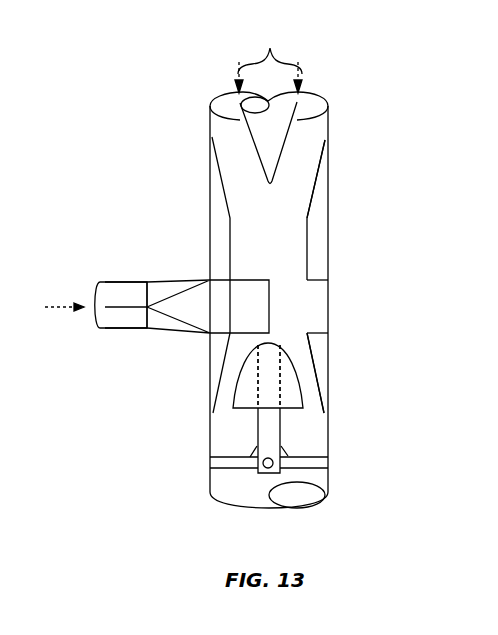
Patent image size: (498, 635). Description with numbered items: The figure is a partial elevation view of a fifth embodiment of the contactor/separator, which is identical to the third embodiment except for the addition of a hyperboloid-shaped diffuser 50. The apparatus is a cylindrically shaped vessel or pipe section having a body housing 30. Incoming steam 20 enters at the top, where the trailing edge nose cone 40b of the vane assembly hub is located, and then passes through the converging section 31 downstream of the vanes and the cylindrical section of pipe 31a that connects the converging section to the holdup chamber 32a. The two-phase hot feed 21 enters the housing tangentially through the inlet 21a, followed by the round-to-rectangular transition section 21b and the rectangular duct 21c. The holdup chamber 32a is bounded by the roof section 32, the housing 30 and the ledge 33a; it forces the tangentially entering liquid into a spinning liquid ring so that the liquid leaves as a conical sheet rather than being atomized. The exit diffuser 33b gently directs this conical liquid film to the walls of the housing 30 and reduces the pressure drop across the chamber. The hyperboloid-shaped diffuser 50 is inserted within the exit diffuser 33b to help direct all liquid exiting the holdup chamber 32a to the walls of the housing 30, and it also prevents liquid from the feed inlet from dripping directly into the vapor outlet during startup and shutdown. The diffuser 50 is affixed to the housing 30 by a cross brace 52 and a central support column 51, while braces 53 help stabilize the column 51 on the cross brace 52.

The incoming steam 20 is at (268, 56).
The two-phase hot feed 21 is at (62, 300).
The inlet 21a is at (122, 282).
The round-to-rectangular transition section 21b is at (178, 281).
The rectangular duct 21c is at (222, 307).
The body housing 30 is at (330, 155).
The converging section 31 is at (317, 187).
The cylindrical section of pipe 31a is at (310, 232).
The roof section 32 is at (320, 278).
The holdup chamber 32a is at (320, 310).
The ledge 33a is at (317, 334).
The exit diffuser 33b is at (323, 378).
The trailing edge nose cone 40b is at (283, 130).
The hyperboloid-shaped diffuser 50 is at (230, 400).
The central support column 51 is at (257, 440).
The cross brace 52 is at (320, 470).
The braces 53 is at (288, 450).